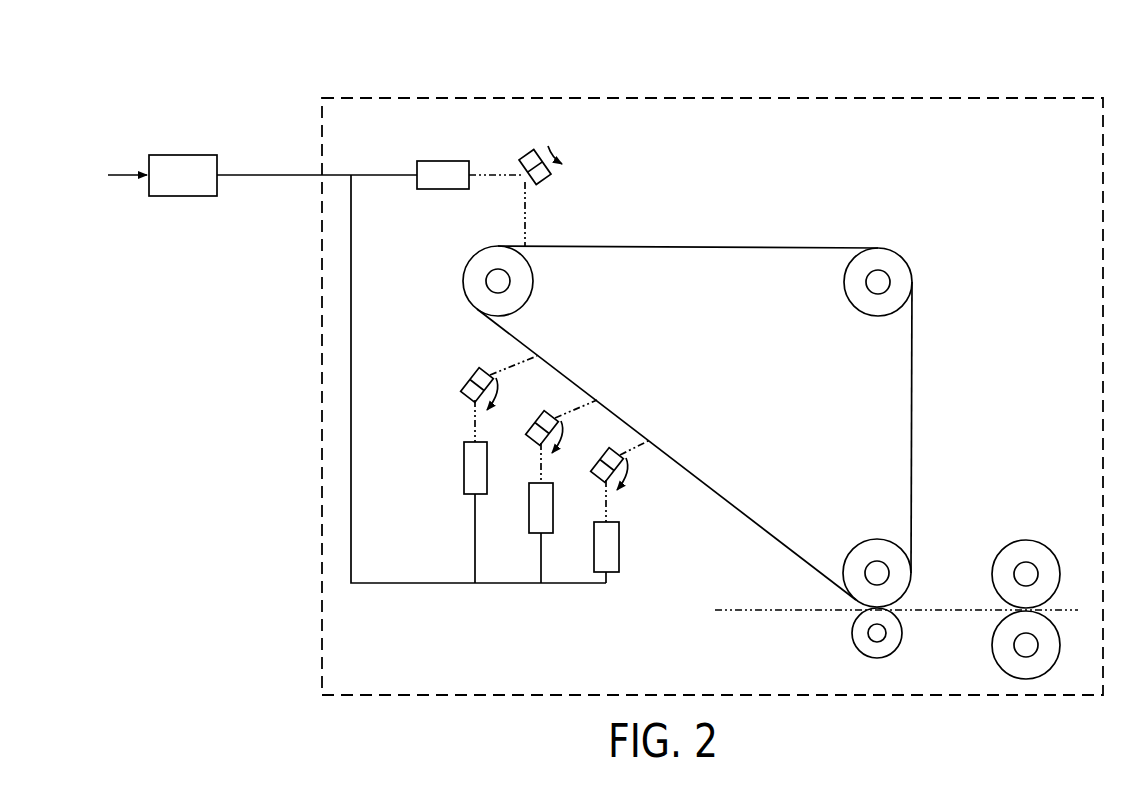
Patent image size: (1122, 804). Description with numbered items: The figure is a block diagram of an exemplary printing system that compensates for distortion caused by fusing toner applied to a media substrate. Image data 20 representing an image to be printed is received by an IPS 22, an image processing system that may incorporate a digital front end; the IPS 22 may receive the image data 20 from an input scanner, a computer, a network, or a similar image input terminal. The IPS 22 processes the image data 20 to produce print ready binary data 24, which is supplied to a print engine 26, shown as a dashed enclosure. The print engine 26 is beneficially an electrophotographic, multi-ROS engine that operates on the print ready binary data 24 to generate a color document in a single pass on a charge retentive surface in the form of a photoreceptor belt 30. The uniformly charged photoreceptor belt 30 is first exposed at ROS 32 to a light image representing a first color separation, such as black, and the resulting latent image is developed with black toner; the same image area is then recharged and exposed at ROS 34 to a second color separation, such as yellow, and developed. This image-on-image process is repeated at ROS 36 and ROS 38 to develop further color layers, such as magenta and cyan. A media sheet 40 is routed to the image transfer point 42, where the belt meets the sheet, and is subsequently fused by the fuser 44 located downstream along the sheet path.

The image data 20 is at (120, 172).
The IPS (Image Processing System) 22 is at (185, 154).
The print ready binary data 24 is at (268, 173).
The print engine 26 is at (633, 92).
The photoreceptor belt 30 is at (660, 246).
The ROS 32 is at (535, 144).
The ROS 34 is at (459, 368).
The ROS 36 is at (524, 408).
The ROS 38 is at (589, 450).
The media sheet 40 is at (787, 614).
The image transfer point 42 is at (900, 606).
The fuser 44 is at (993, 566).